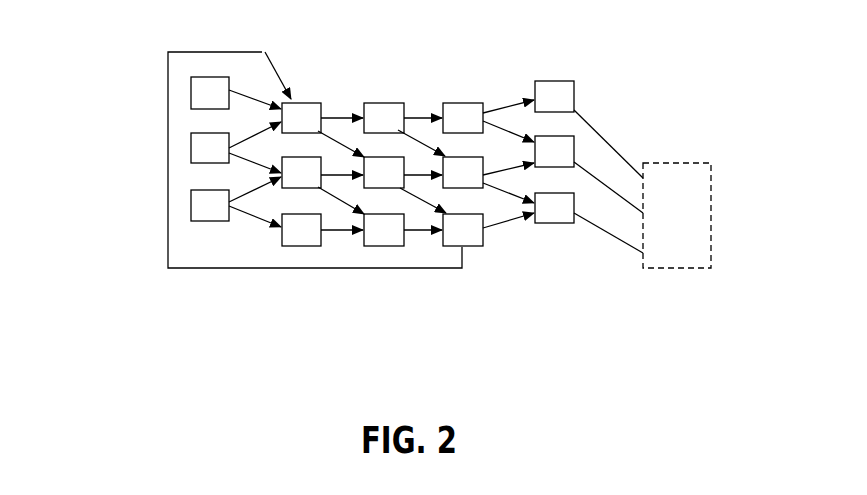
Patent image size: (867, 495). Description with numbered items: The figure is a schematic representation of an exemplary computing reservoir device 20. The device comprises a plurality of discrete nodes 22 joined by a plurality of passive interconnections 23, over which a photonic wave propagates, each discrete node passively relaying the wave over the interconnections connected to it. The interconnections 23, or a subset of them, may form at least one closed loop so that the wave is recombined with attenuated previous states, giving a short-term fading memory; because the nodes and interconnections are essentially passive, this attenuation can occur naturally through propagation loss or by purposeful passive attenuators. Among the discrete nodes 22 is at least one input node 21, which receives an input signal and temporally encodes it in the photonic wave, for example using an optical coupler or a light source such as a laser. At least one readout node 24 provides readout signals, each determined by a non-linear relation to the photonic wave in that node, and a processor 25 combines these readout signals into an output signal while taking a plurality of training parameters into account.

The computing reservoir device 20 is at (106, 37).
The input node 21 is at (147, 149).
The discrete nodes 22 is at (382, 224).
The passive interconnections 23 is at (381, 128).
The readout node 24 is at (596, 156).
The processor 25 is at (701, 163).